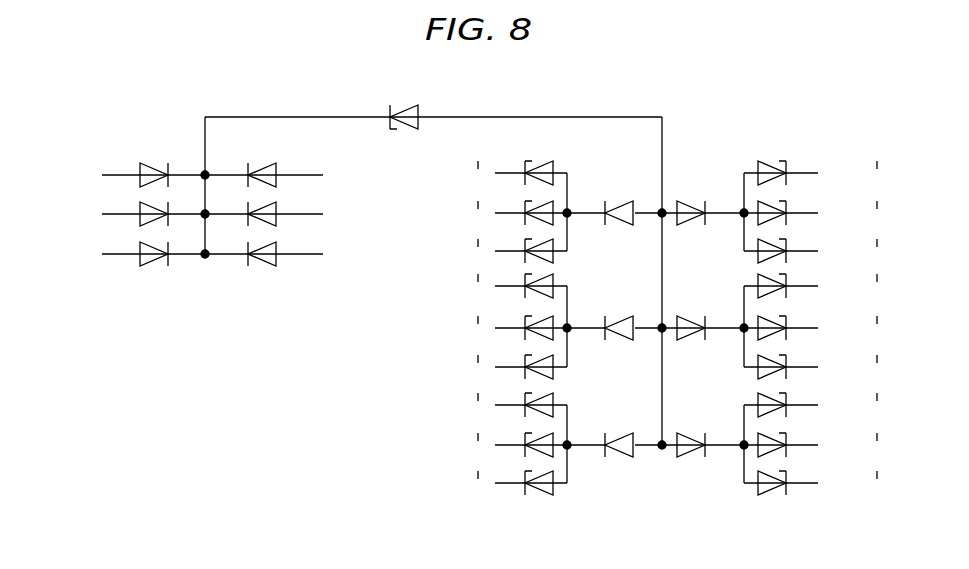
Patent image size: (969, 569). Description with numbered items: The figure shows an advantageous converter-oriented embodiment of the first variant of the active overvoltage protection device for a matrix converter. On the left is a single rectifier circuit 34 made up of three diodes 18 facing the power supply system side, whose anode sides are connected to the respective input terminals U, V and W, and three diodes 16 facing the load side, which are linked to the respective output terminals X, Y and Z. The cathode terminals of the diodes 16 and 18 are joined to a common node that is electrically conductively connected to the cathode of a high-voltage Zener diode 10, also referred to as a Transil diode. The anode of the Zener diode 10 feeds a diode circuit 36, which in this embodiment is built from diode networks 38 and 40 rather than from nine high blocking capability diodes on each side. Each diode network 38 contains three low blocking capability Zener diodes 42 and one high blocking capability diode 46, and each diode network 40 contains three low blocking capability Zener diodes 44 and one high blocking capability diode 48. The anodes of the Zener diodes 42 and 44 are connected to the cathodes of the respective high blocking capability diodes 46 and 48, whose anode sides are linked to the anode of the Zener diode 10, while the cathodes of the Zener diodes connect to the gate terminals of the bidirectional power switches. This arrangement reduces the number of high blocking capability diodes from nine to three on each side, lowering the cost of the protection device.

The high-voltage Zener diode 10 is at (398, 106).
The diodes facing the load side 16 is at (262, 232).
The diodes facing the power supply system side 18 is at (154, 232).
The rectifier circuit 34 is at (220, 258).
The diode circuit 36 is at (651, 449).
The diode network 38 is at (598, 489).
The diode network 40 is at (731, 487).
The low blocking capability Zener diodes 42 is at (539, 311).
The low blocking capability Zener diodes 44 is at (772, 311).
The high blocking capability diode 46 is at (619, 313).
The high blocking capability diode 48 is at (691, 313).